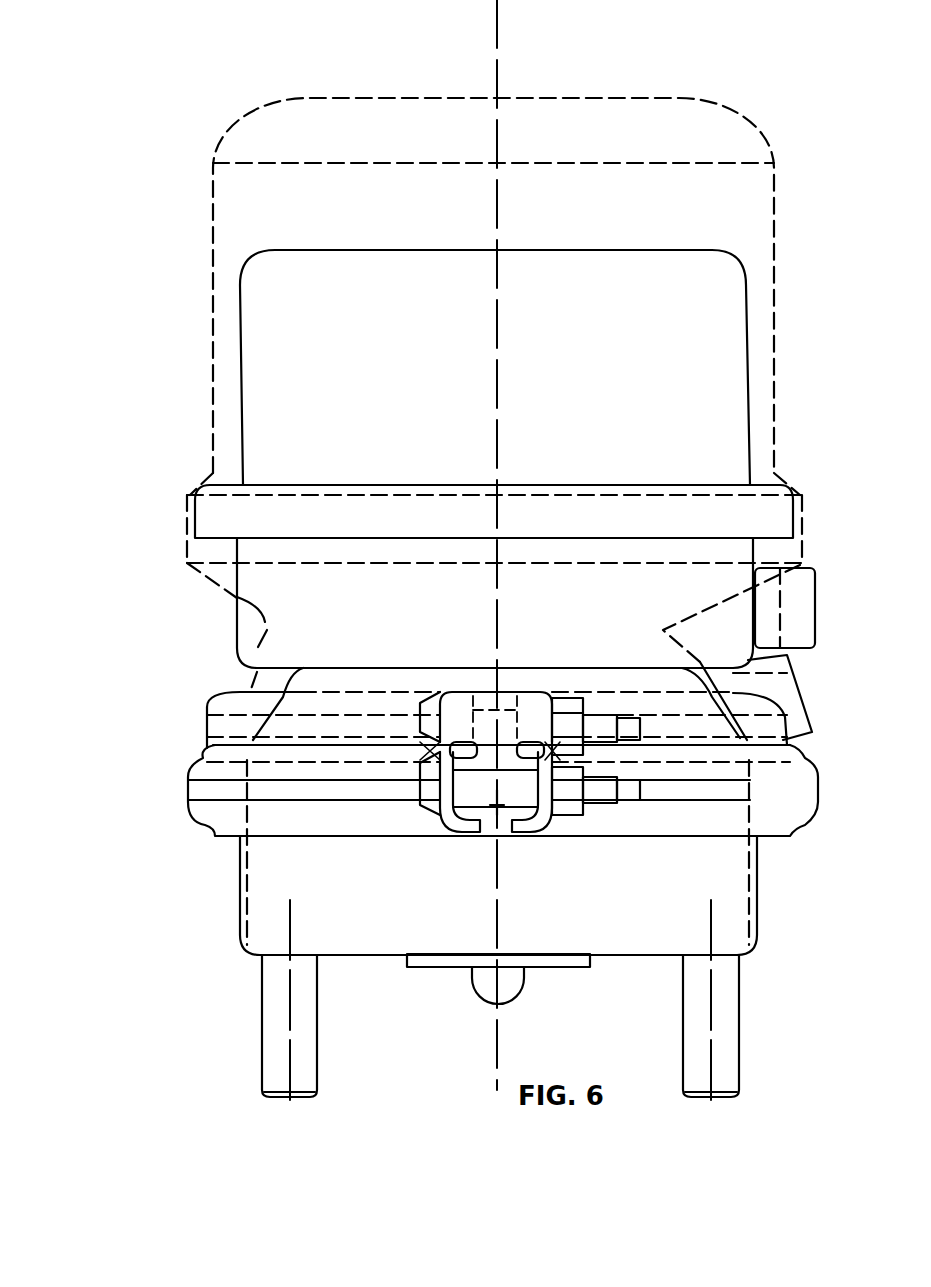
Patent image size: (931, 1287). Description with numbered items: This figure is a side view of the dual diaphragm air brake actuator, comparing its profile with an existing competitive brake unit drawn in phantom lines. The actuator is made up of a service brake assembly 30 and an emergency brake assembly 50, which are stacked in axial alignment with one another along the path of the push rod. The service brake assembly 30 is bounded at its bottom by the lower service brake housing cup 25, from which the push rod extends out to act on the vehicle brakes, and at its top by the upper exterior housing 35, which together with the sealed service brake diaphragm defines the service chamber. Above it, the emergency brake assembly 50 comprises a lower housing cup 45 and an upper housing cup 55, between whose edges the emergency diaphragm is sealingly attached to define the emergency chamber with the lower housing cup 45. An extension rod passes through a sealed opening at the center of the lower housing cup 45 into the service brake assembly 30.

The lower service brake housing cup 25 is at (260, 893).
The service brake assembly 30 is at (147, 827).
The upper exterior housing 35 is at (300, 705).
The lower housing cup 45 is at (262, 580).
The emergency brake assembly 50 is at (150, 403).
The upper housing cup 55 is at (732, 392).